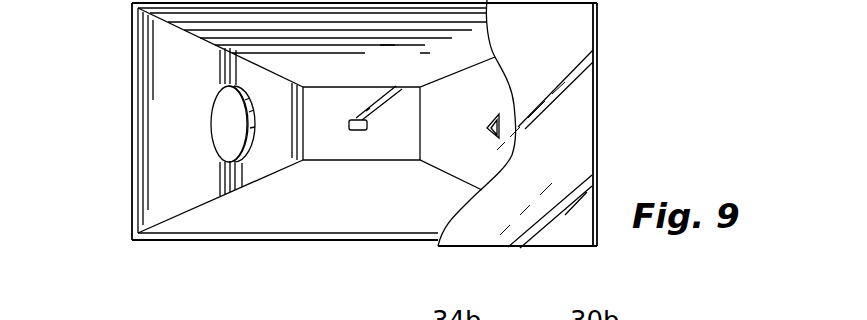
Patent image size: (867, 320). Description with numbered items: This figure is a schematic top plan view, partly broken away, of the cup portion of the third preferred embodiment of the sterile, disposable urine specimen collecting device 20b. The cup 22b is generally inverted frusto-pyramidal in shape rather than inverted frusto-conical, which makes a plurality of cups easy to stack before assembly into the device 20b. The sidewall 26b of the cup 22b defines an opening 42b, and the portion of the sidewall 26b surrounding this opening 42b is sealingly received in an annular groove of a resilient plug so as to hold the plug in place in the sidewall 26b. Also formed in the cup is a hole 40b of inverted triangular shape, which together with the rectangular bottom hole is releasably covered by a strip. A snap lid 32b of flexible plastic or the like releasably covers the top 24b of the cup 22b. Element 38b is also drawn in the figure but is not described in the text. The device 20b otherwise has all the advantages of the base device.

The device 20b is at (797, 31).
The cup 22b is at (131, 57).
The sidewall 26b is at (152, 90).
The top 24b is at (287, 220).
The opening 42b is at (213, 148).
The mounting bracket 38b is at (357, 132).
The hole 40b is at (495, 127).
The snap lid 32b is at (587, 103).